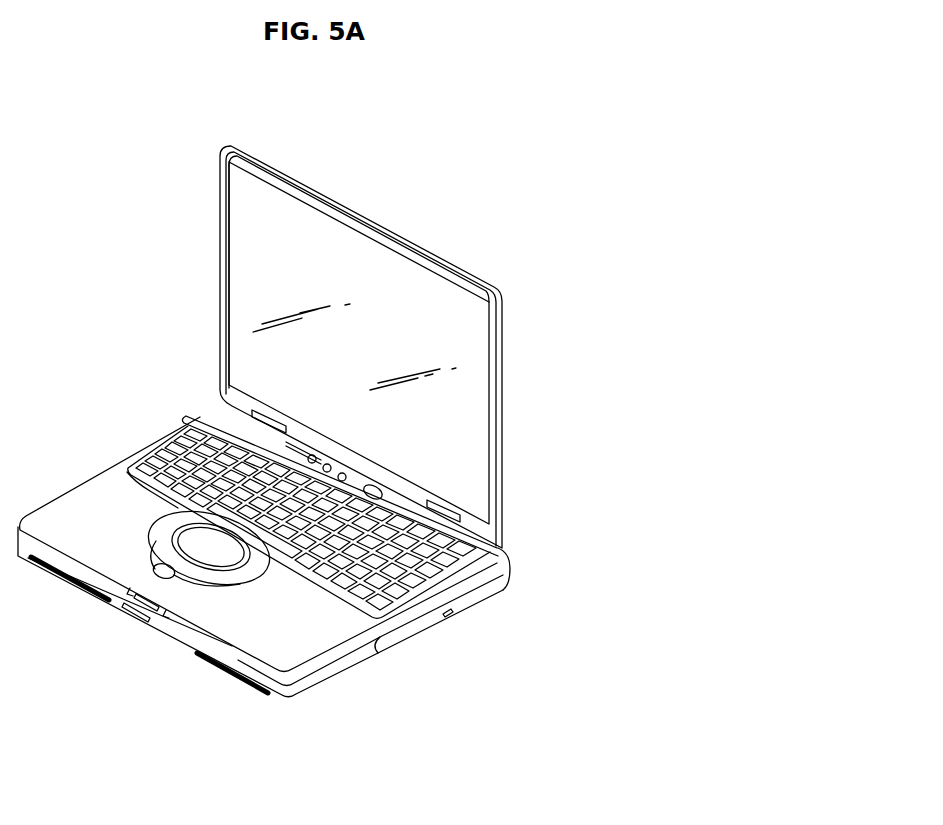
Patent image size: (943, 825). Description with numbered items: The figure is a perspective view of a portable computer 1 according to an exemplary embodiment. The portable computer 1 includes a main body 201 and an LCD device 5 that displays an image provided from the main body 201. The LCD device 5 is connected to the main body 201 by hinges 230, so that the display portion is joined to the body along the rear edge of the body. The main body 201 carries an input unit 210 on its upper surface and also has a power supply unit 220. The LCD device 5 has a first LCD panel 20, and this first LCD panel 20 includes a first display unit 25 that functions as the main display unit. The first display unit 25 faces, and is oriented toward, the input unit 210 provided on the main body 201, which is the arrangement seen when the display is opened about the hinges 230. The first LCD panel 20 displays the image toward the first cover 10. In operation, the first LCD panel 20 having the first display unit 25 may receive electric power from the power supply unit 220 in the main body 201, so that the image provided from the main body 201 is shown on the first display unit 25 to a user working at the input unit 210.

The portable computer 1 is at (611, 107).
The LCD device 5 is at (376, 216).
The first cover 10 is at (490, 406).
The first LCD panel 20 is at (241, 259).
The first display unit 25 is at (365, 349).
The main body 201 is at (339, 672).
The input unit 210 is at (426, 520).
The power supply unit 220 is at (405, 637).
The hinges 230 is at (232, 410).